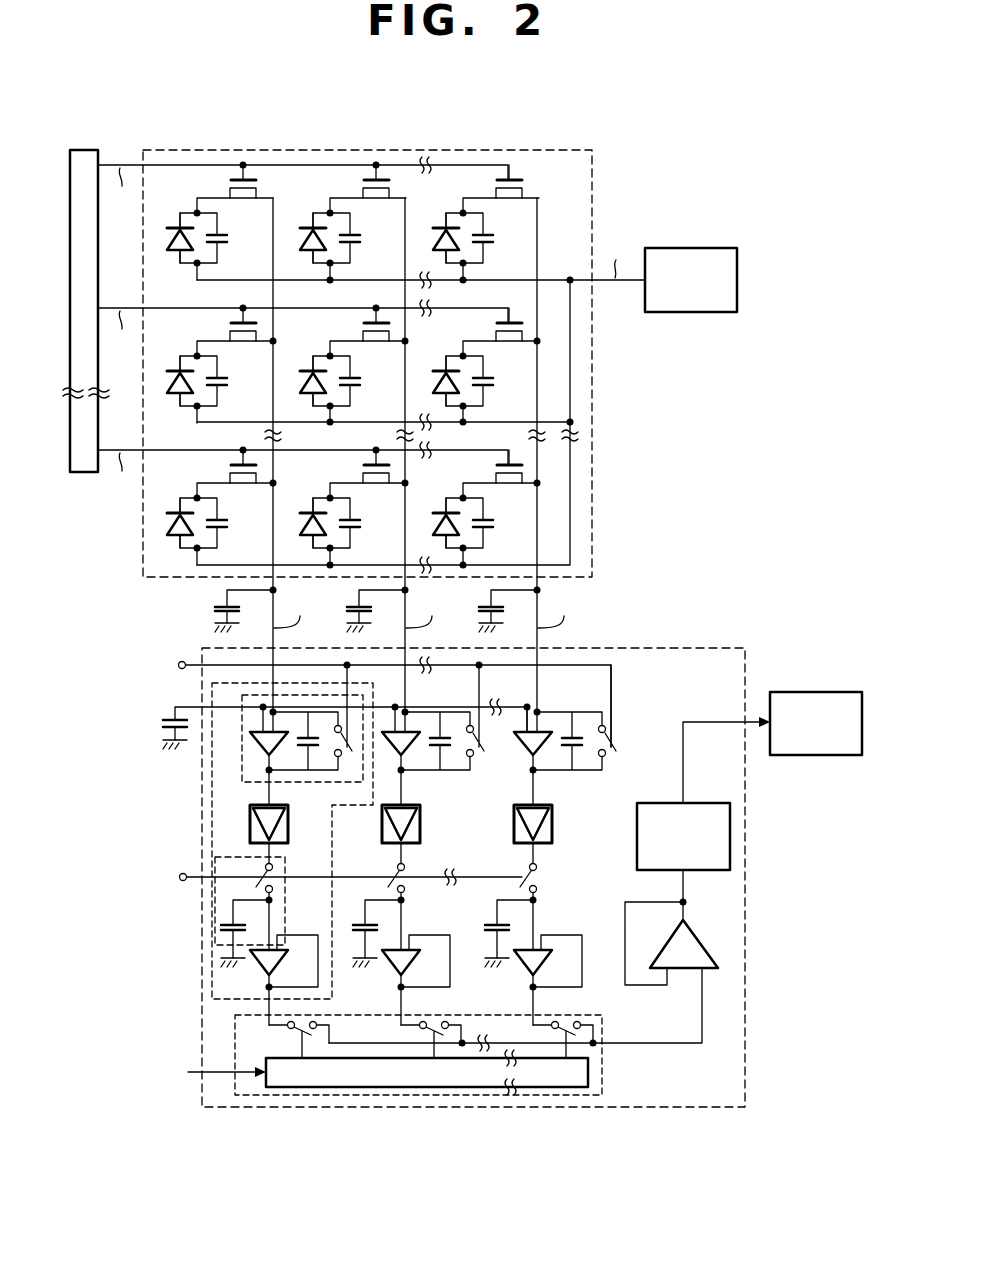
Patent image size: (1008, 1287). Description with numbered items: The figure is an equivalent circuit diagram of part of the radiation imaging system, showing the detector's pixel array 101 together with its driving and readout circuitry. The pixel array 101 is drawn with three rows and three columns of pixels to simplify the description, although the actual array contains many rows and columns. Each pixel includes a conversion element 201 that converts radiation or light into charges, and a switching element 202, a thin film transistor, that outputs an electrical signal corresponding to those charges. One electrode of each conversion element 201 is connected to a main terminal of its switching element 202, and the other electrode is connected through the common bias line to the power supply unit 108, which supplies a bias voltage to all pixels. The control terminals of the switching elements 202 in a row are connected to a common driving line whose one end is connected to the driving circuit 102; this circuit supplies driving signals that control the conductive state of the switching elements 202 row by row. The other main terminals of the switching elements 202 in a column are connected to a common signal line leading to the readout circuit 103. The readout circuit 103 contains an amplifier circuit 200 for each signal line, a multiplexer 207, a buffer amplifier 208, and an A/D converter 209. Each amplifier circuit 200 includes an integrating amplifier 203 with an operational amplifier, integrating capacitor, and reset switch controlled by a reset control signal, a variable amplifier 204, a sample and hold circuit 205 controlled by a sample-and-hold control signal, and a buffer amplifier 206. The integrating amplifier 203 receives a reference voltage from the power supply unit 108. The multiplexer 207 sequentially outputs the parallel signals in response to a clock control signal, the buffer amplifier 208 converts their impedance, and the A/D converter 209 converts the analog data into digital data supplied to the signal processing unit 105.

The pixel array 101 is at (371, 409).
The driving circuit 102 is at (85, 150).
The readout circuit 103 is at (454, 879).
The signal processing unit 105 is at (838, 756).
The power supply unit 108 is at (710, 248).
The amplifier circuit 200 is at (248, 845).
The conversion element 201 is at (475, 212).
The switching element 202 is at (520, 178).
The integrating amplifier 203 is at (242, 777).
The variable amplifier 204 is at (250, 818).
The sample and hold circuit 205 is at (215, 945).
The buffer amplifier 206 is at (268, 975).
The multiplexer 207 is at (235, 1033).
The buffer amplifier 208 is at (706, 948).
The A/D converter 209 is at (731, 818).